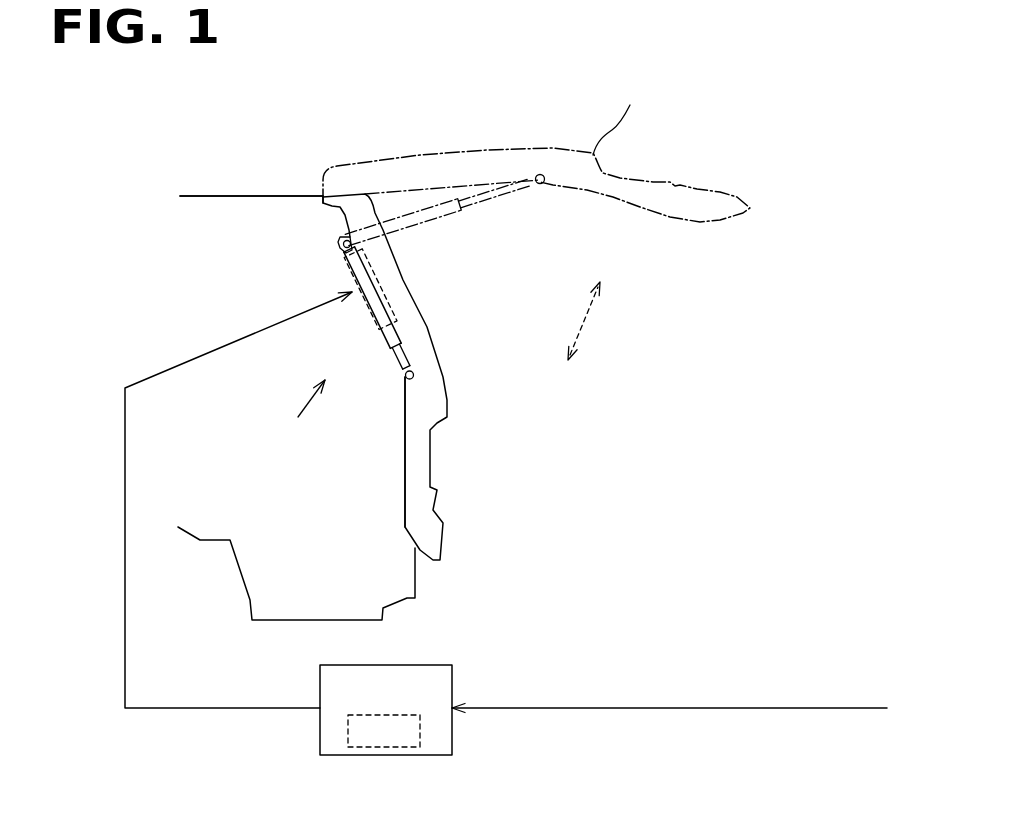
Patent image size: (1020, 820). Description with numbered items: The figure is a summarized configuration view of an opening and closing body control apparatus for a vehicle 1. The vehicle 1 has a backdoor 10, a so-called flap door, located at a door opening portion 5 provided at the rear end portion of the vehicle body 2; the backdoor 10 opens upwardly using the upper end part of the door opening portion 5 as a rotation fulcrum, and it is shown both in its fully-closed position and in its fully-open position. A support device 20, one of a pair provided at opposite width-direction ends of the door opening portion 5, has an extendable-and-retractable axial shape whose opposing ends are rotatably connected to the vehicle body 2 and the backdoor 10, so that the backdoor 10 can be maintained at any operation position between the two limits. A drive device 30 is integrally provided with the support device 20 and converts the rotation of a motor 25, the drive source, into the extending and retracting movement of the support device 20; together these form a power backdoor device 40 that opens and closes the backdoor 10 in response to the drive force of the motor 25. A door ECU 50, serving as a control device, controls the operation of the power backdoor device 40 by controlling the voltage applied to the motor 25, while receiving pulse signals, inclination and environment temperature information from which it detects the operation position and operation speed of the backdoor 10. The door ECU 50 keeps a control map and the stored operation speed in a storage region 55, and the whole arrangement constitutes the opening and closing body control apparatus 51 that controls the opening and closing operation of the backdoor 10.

The vehicle 1 is at (133, 110).
The vehicle body 2 is at (245, 196).
The door opening portion 5 is at (411, 445).
The backdoor 10 is at (413, 300).
The support device 20 is at (388, 343).
The motor 25 is at (337, 254).
The drive device 30 is at (337, 254).
The power backdoor device 40 is at (303, 414).
The door ECU 50 is at (397, 664).
The opening and closing body control apparatus 51 is at (115, 750).
The storage region 55 is at (348, 733).